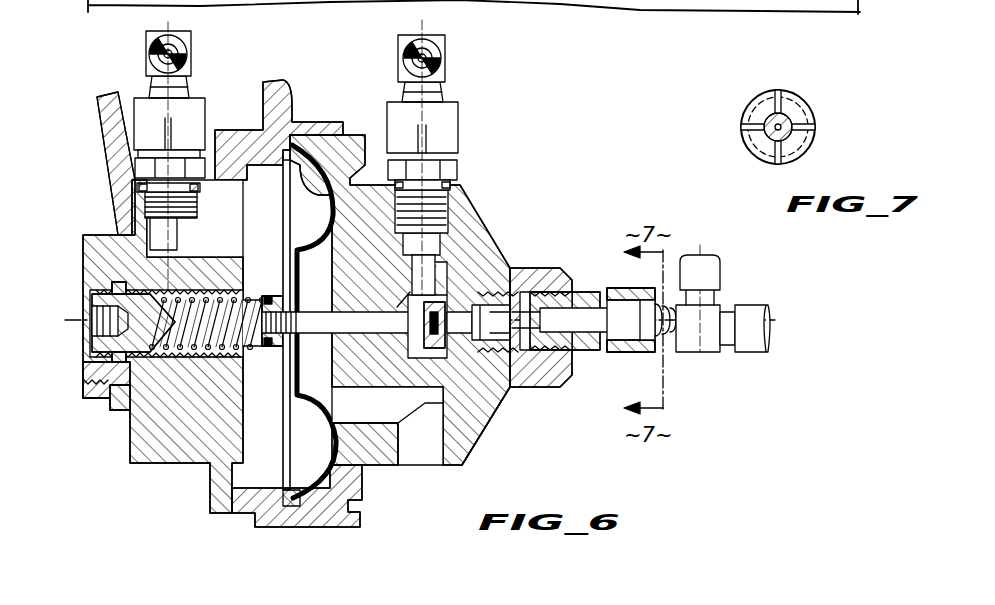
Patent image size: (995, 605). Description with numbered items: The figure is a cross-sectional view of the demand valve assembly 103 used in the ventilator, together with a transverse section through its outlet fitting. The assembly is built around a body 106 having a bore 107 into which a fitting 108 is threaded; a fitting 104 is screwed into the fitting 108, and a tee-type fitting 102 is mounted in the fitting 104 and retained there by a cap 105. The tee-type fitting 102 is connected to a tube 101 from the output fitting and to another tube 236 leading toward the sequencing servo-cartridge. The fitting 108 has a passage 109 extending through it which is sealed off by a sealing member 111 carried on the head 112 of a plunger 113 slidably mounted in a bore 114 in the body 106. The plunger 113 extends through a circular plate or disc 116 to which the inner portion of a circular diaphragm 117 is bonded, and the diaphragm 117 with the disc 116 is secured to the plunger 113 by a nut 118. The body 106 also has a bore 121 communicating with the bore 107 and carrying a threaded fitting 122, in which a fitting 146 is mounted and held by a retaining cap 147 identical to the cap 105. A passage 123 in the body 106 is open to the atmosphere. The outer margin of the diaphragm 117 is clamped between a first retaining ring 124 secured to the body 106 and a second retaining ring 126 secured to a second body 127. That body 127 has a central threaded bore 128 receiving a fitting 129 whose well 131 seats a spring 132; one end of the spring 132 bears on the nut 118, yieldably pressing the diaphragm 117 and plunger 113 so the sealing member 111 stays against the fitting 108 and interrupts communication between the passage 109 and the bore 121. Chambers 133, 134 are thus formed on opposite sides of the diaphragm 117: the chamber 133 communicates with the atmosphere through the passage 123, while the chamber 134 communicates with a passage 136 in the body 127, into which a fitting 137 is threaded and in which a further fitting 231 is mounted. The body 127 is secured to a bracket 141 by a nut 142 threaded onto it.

In FIG. 6, the tube 101 is at (756, 312).
In FIG. 6, the tee-type fitting 102 is at (684, 344).
In FIG. 7, the tee-type fitting 102 is at (792, 128).
In FIG. 6, the demand valve assembly 103 is at (314, 108).
In FIG. 6, the fitting 104 is at (590, 292).
In FIG. 6, the cap 105 is at (618, 354).
In FIG. 7, the cap 105 is at (784, 118).
In FIG. 6, the body 106 is at (472, 228).
In FIG. 6, the bore 107 is at (436, 294).
In FIG. 6, the fitting 108 is at (566, 266).
In FIG. 6, the passage 109 is at (500, 368).
In FIG. 6, the sealing member 111 is at (456, 350).
In FIG. 6, the head 112 is at (414, 306).
In FIG. 6, the plunger 113 is at (410, 352).
In FIG. 6, the bore 114 is at (346, 310).
In FIG. 6, the circular plate or disc 116 is at (302, 250).
In FIG. 6, the circular diaphragm 117 is at (290, 198).
In FIG. 6, the nut 118 is at (276, 294).
In FIG. 6, the bore 121 is at (410, 270).
In FIG. 6, the fitting 122 is at (456, 170).
In FIG. 6, the passage 123 is at (400, 450).
In FIG. 6, the first retaining ring 124 is at (350, 506).
In FIG. 6, the second retaining ring 126 is at (226, 510).
In FIG. 6, the body 127 is at (198, 452).
In FIG. 6, the threaded bore 128 is at (186, 362).
In FIG. 6, the fitting 129 is at (92, 296).
In FIG. 6, the well 131 is at (170, 275).
In FIG. 6, the spring 132 is at (228, 360).
In FIG. 6, the chamber 133 is at (326, 370).
In FIG. 6, the chamber 134 is at (274, 432).
In FIG. 6, the passage 136 is at (232, 214).
In FIG. 6, the fitting 137 is at (196, 144).
In FIG. 6, the bracket 141 is at (112, 178).
In FIG. 6, the nut 142 is at (88, 405).
In FIG. 6, the fitting 146 is at (444, 58).
In FIG. 6, the retaining cap 147 is at (452, 120).
In FIG. 6, the fitting 231 is at (200, 34).
In FIG. 6, the tube 236 is at (722, 278).